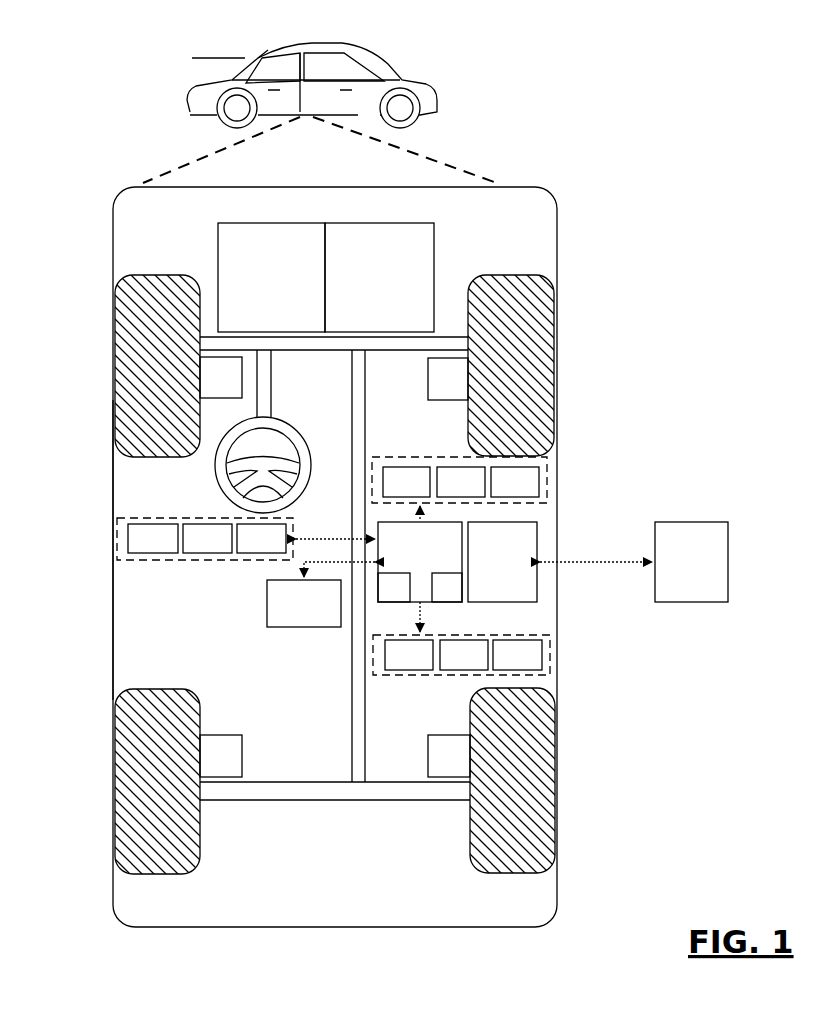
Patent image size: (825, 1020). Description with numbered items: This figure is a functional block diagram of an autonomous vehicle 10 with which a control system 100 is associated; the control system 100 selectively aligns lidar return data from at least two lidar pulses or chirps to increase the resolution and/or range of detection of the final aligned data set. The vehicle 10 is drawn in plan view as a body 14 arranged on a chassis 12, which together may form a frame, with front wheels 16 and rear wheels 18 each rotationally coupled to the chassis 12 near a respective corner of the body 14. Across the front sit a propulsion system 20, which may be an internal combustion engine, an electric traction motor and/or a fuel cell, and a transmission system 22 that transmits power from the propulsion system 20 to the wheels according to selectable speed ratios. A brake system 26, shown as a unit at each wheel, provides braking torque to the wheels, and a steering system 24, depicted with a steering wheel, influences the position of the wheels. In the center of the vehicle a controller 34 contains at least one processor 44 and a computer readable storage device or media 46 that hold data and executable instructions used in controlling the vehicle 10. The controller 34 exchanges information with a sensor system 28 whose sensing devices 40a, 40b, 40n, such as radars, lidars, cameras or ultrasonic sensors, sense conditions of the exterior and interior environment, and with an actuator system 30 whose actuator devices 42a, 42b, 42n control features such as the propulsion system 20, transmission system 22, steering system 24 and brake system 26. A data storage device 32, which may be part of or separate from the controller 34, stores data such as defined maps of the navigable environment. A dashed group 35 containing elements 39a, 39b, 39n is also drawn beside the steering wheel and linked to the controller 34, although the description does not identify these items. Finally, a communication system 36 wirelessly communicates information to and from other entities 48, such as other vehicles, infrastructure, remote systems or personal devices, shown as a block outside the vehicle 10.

The vehicle 10 is at (190, 100).
The control system 100 is at (584, 200).
The chassis 12 is at (352, 720).
The body 14 is at (113, 540).
The front wheels 16 is at (155, 275).
The rear wheels 18 is at (172, 875).
The propulsion system 20 is at (271, 277).
The transmission system 22 is at (379, 277).
The steering system 24 is at (300, 380).
The brake system 26 is at (335, 567).
The sensor system 28 is at (400, 457).
The actuator system 30 is at (420, 677).
The data storage device 32 is at (304, 603).
The controller 34 is at (420, 562).
The user interface system 35 is at (160, 562).
The communication system 36 is at (502, 562).
The user interface device 39a is at (153, 538).
The user interface device 39b is at (207, 538).
The user interface device 39n is at (261, 538).
The sensing device 40a is at (406, 482).
The sensing device 40b is at (461, 482).
The sensing device 40n is at (515, 482).
The actuator device 42a is at (409, 655).
The actuator device 42b is at (464, 655).
The actuator device 42n is at (517, 655).
The processor 44 is at (394, 587).
The computer readable storage device or media 46 is at (447, 587).
The other entities 48 is at (691, 562).